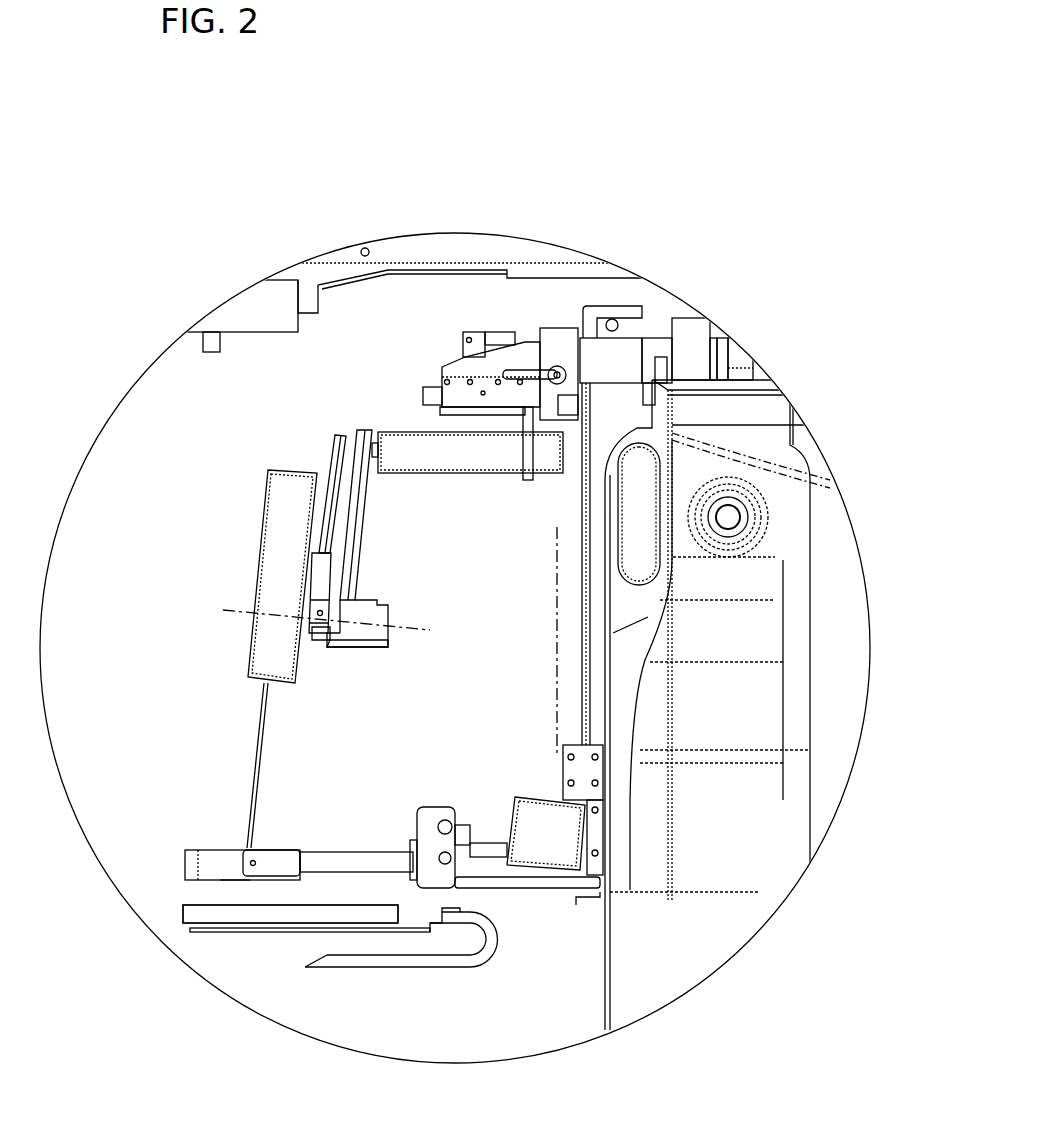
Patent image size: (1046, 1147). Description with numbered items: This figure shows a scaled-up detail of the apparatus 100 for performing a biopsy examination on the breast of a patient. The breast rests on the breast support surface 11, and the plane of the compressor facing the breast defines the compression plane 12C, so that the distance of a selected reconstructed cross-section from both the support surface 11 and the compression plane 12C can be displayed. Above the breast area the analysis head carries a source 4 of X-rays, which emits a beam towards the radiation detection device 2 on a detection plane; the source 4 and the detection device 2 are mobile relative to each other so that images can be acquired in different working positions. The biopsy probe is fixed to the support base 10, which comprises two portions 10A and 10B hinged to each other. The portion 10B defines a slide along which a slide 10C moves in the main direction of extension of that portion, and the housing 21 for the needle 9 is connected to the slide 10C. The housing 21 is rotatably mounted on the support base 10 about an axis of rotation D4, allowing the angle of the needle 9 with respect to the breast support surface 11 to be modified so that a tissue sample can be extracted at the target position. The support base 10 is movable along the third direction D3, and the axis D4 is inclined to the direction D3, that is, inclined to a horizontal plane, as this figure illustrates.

The apparatus 100 is at (679, 277).
The source of X-rays 4 is at (226, 361).
The housing 21 is at (223, 576).
The support base 10 is at (343, 654).
The portion 10A is at (357, 540).
The portion 10B is at (315, 652).
The slide 10C is at (317, 577).
The third direction D3 is at (557, 588).
The axis of rotation D4 is at (240, 613).
The needle 9 is at (263, 781).
The breast support surface 11 is at (360, 901).
The radiation detection device 2 is at (237, 925).
The compression plane 12C is at (233, 890).